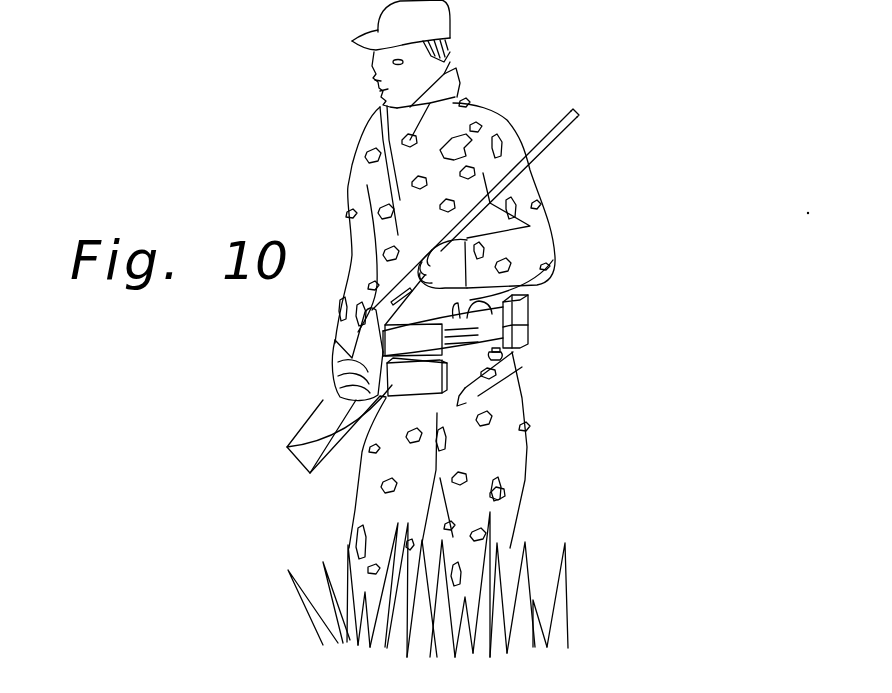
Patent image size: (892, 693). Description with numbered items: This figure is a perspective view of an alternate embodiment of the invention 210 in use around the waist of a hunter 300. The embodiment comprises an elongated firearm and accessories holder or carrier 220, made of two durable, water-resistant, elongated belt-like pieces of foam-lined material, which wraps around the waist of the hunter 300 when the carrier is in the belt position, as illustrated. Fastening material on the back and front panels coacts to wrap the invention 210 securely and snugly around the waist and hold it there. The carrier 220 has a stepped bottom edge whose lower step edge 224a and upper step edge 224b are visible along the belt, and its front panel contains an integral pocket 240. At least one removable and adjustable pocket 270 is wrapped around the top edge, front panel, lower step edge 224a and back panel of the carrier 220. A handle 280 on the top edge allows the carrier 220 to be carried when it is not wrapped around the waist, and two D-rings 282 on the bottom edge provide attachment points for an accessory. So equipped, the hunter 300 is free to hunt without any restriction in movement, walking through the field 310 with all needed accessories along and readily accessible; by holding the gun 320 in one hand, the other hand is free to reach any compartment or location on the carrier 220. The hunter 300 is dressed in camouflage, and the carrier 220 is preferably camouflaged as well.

The hunter 300 is at (480, 110).
The gun 320 is at (574, 119).
The field 310 is at (586, 582).
The alternate embodiment of the invention 210 is at (550, 333).
The carrier 220 is at (538, 360).
The removable and adjustable pocket 270 is at (521, 315).
The handle 280 is at (480, 287).
The D-rings 282 is at (492, 401).
The lower step edge 224a is at (287, 447).
The upper step edge 224b is at (520, 418).
The integral pocket 240 is at (310, 473).